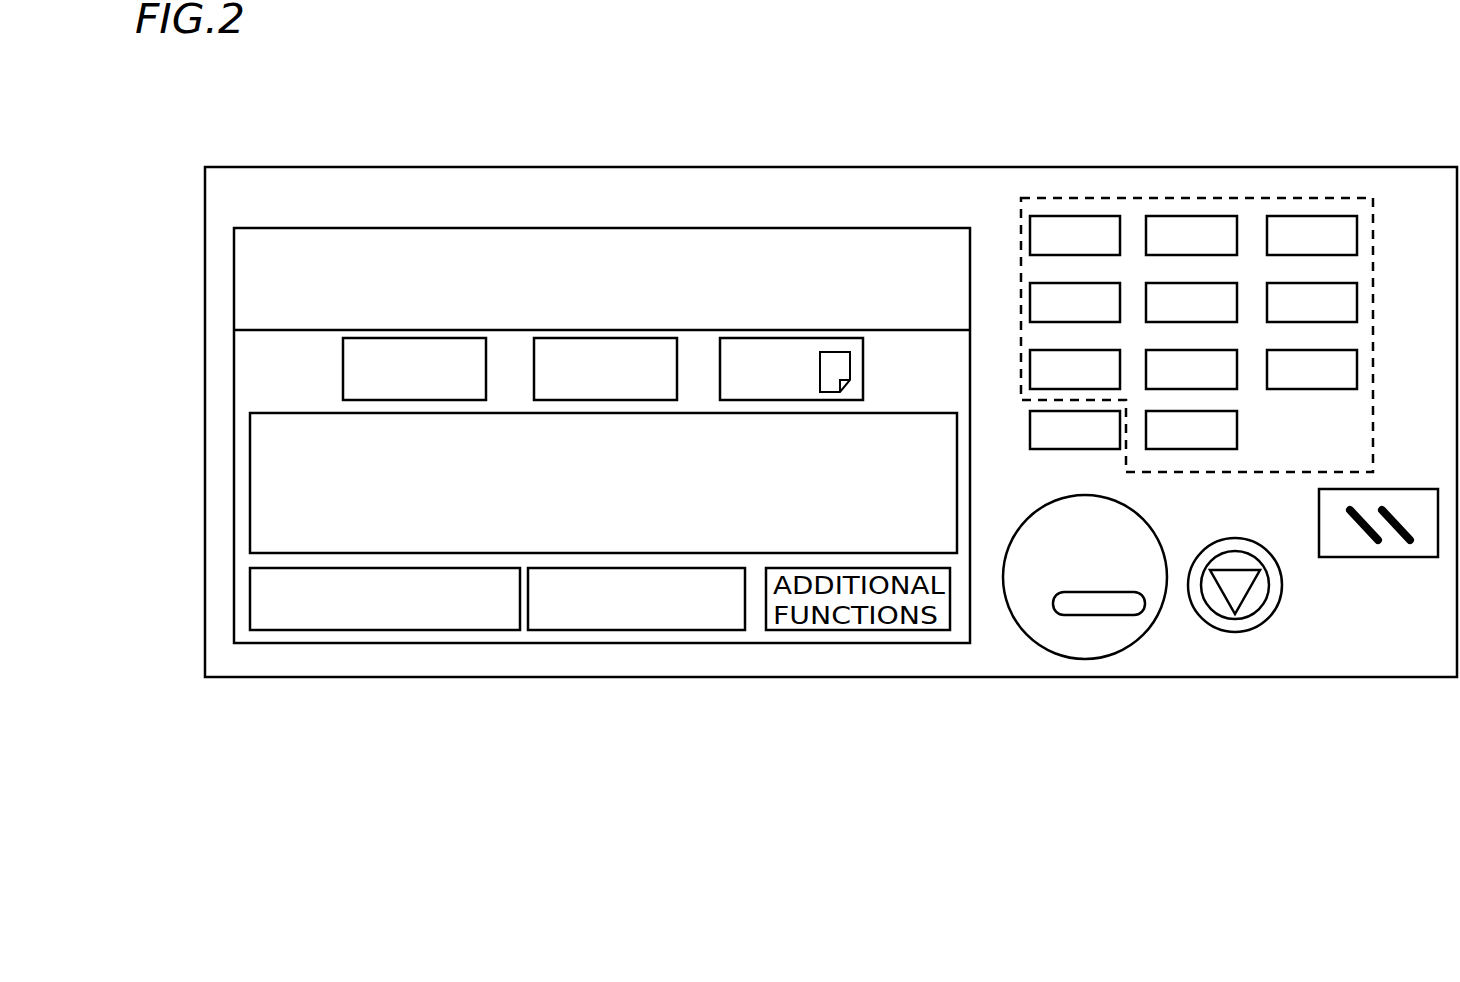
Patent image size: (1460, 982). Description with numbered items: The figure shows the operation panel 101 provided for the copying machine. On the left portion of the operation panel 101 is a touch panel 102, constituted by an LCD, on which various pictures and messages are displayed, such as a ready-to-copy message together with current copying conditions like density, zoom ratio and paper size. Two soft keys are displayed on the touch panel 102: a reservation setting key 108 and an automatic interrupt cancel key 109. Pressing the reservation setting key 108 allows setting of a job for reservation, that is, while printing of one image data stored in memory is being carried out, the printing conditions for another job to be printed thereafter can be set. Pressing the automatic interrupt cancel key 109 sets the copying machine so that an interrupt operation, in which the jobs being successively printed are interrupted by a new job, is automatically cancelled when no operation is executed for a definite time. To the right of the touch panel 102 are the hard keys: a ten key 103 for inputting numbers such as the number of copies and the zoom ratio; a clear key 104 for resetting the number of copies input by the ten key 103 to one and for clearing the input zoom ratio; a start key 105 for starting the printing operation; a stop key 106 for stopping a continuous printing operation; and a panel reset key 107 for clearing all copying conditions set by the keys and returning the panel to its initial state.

The operation panel 101 is at (267, 133).
The touch panel 102 is at (552, 228).
The ten key 103 is at (1200, 198).
The clear key 104 is at (1028, 427).
The start key 105 is at (1085, 660).
The stop key 106 is at (1226, 632).
The panel reset key 107 is at (1397, 557).
The reservation setting key 108 is at (667, 630).
The automatic interrupt cancel key 109 is at (393, 630).